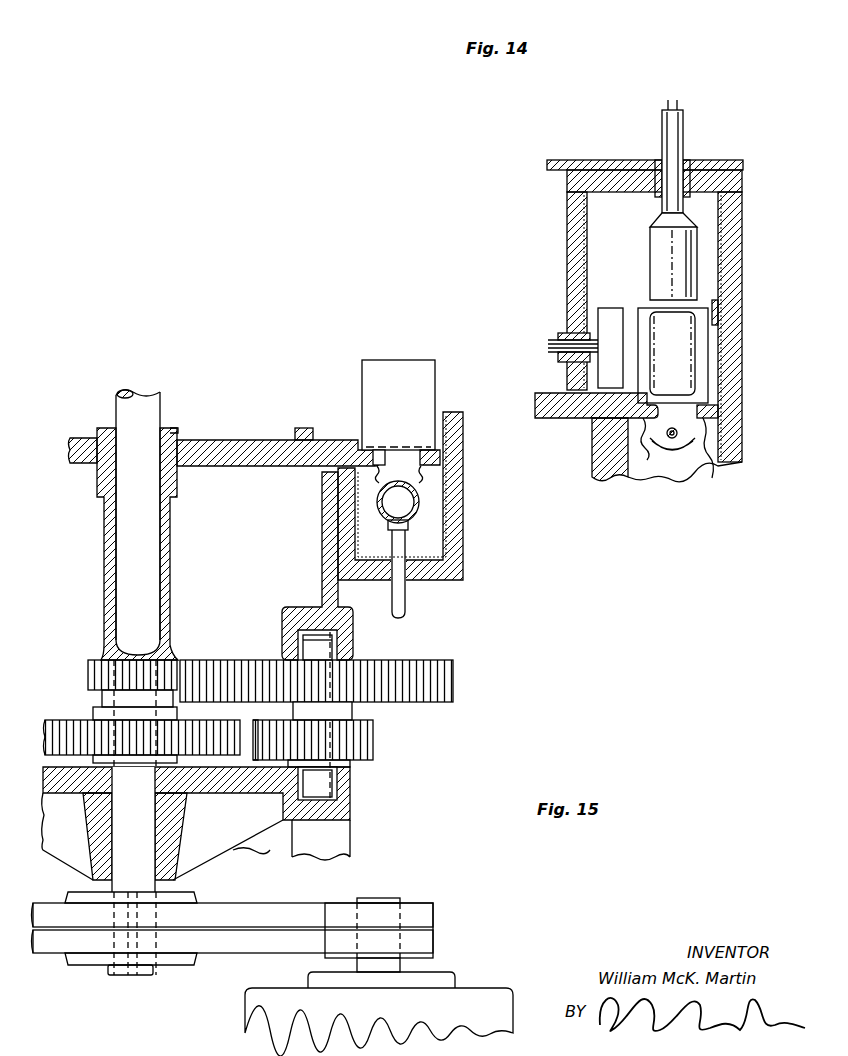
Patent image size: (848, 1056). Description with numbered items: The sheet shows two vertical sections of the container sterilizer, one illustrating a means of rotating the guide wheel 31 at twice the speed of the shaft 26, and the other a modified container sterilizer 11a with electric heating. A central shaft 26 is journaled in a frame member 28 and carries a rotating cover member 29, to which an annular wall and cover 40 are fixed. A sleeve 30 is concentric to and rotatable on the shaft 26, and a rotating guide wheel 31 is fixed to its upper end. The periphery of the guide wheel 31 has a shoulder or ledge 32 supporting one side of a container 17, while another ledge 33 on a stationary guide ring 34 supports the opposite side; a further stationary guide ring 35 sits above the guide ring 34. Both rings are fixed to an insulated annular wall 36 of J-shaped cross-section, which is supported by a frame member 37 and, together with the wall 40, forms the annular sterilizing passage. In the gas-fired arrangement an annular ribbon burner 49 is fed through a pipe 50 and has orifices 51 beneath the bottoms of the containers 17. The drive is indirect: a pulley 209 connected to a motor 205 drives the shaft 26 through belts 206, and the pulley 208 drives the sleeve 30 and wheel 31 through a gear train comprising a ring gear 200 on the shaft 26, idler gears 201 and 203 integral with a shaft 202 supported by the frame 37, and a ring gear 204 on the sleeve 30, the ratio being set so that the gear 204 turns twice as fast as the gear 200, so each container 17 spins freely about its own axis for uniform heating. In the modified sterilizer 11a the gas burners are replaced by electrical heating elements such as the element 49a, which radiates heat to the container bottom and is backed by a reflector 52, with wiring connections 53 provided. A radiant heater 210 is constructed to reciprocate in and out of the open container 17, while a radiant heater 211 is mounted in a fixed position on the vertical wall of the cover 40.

In FIG. 15, the container sterilizer 11a is at (667, 157).
In FIG. 14, the container 17 is at (396, 365).
In FIG. 15, the container 17 is at (683, 367).
In FIG. 14, the central shaft 26 is at (160, 392).
In FIG. 14, the frame member 28 is at (350, 811).
In FIG. 15, the cover member 29 is at (743, 165).
In FIG. 14, the sleeve 30 is at (170, 582).
In FIG. 14, the rotating guide wheel 31 is at (278, 466).
In FIG. 15, the rotating guide wheel 31 is at (590, 418).
In FIG. 14, the shoulder or ledge 32 is at (370, 482).
In FIG. 15, the shoulder or ledge 32 is at (642, 445).
In FIG. 14, the ledge 33 is at (428, 482).
In FIG. 15, the ledge 33 is at (721, 455).
In FIG. 14, the stationary guide ring 34 is at (414, 456).
In FIG. 15, the stationary guide ring 34 is at (718, 412).
In FIG. 15, the stationary guide ring 35 is at (718, 311).
In FIG. 14, the insulated annular wall 36 is at (463, 549).
In FIG. 15, the insulated annular wall 36 is at (742, 346).
In FIG. 14, the frame member 37 is at (322, 565).
In FIG. 15, the frame member 37 is at (592, 459).
In FIG. 15, the annular wall and cover 40 is at (742, 190).
In FIG. 14, the annular ribbon burner 49 is at (408, 525).
In FIG. 15, the electrical heating element 49a is at (688, 421).
In FIG. 14, the pipe 50 is at (406, 602).
In FIG. 14, the orifices 51 is at (398, 502).
In FIG. 15, the reflector 52 is at (670, 456).
In FIG. 15, the wiring connections 53 is at (681, 108).
In FIG. 14, the ring gear 200 is at (245, 727).
In FIG. 14, the idler gear 201 is at (375, 743).
In FIG. 14, the shaft 202 is at (345, 714).
In FIG. 14, the idler gear 203 is at (453, 680).
In FIG. 14, the ring gear 204 is at (93, 670).
In FIG. 14, the motor 205 is at (470, 988).
In FIG. 14, the belts 206 is at (266, 906).
In FIG. 14, the pulley 208 is at (212, 903).
In FIG. 14, the pulley 209 is at (418, 898).
In FIG. 15, the radiant heater 210 is at (650, 263).
In FIG. 15, the radiant heater 211 is at (623, 318).